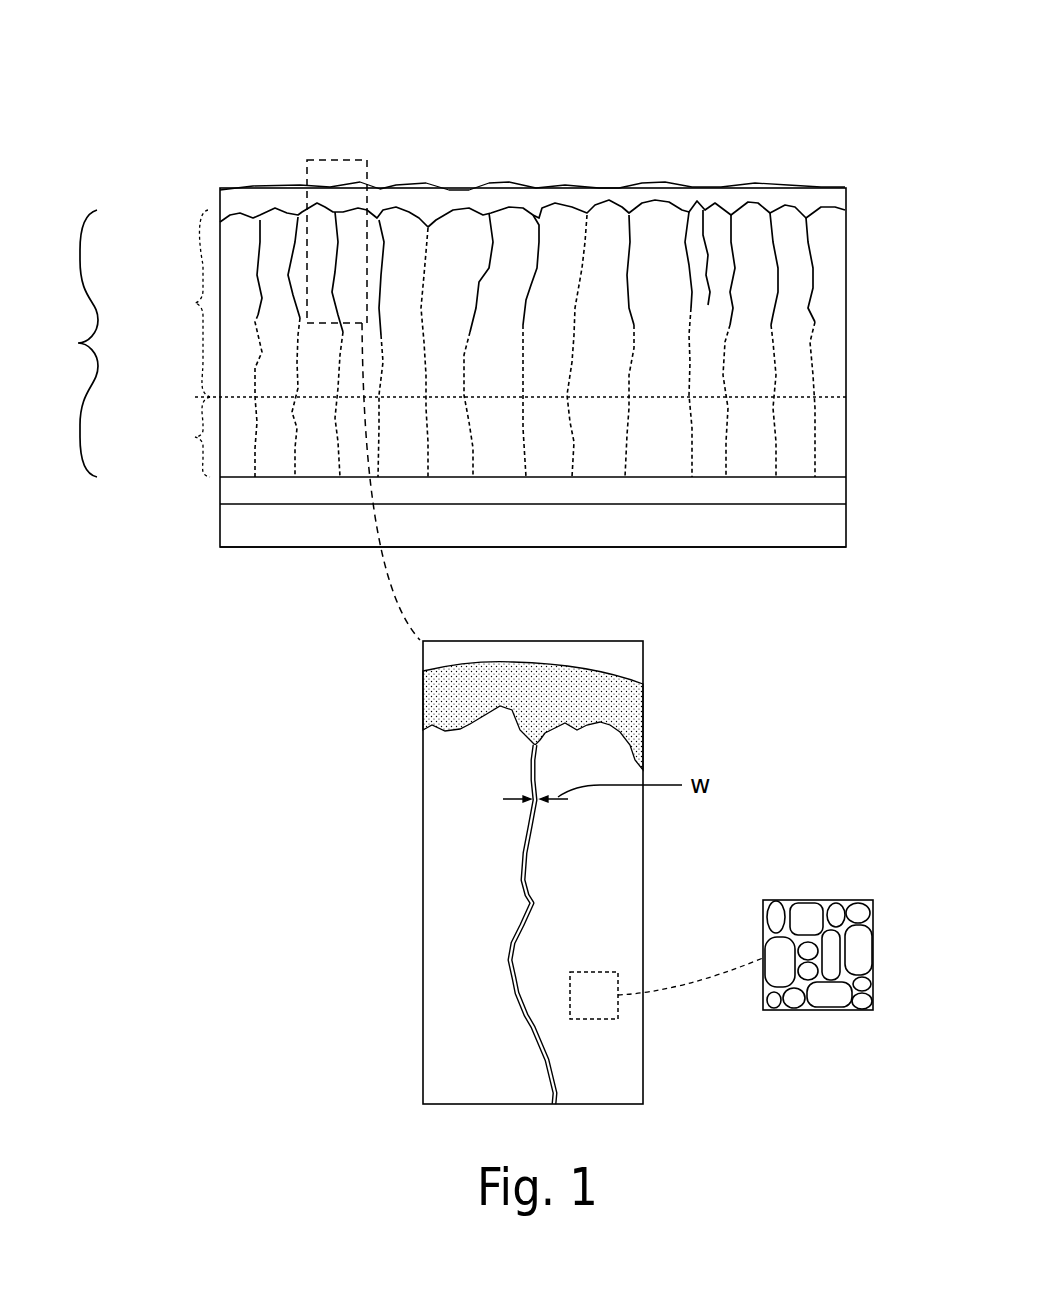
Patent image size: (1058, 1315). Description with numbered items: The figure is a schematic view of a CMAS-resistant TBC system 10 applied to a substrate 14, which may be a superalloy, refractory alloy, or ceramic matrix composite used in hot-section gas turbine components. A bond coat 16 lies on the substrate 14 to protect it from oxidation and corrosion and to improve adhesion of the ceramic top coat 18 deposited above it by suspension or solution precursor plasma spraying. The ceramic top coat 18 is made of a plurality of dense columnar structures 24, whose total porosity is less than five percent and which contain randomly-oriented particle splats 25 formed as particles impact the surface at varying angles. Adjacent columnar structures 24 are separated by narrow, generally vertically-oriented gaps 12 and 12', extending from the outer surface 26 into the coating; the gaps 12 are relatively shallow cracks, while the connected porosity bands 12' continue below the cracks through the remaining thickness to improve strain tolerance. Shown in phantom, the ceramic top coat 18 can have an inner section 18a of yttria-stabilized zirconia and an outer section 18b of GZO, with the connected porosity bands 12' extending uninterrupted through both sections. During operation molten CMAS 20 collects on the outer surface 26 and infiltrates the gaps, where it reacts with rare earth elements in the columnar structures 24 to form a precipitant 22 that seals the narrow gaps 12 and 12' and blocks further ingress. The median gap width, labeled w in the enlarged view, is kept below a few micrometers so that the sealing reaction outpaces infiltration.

The CMAS-resistant TBC system 10 is at (198, 105).
The vertically-oriented gaps (cracks) 12 is at (768, 298).
The connected porosity bands 12' is at (570, 605).
The substrate 14 is at (568, 534).
The bond coat 16 is at (817, 490).
The ceramic top coat 18 is at (70, 343).
The inner section 18a is at (179, 437).
The outer section 18b is at (497, 303).
The molten CMAS 20 is at (835, 194).
The precipitant 22 is at (528, 755).
The columnar structures 24 is at (826, 313).
The randomly-oriented particle splats 25 is at (873, 945).
The outer surface 26 is at (652, 198).